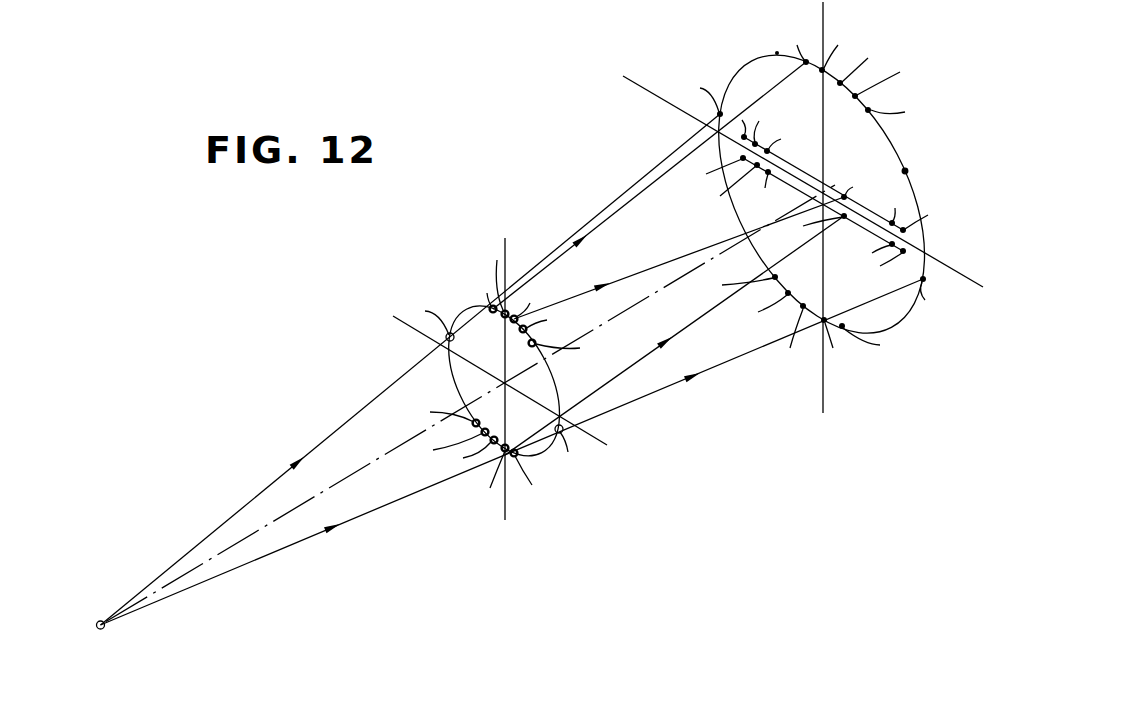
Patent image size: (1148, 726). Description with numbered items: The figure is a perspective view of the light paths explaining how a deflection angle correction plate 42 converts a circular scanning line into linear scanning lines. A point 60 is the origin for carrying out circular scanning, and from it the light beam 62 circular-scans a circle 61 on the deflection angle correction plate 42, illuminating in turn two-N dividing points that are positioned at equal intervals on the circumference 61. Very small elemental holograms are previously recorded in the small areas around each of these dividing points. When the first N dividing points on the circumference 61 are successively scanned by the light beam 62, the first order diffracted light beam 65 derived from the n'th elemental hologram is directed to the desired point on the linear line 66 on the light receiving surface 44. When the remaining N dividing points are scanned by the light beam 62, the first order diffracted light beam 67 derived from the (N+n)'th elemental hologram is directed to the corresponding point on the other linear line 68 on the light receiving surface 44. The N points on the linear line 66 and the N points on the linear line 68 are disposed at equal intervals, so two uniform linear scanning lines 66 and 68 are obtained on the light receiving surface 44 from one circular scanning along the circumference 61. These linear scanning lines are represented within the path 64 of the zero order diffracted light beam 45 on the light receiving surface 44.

The deflection angle correction plate 42 is at (506, 379).
The light receiving surface 44 is at (803, 207).
The zero order diffracted light beam 45 is at (608, 214).
The point 60 is at (102, 620).
The circle 61 is at (553, 367).
The light beam 62 is at (237, 512).
The path of the zero order diffracted light beam 64 is at (908, 170).
The first order diffracted light beam 65 is at (652, 266).
The linear line 66 is at (822, 180).
The first order diffracted light beam 67 is at (688, 338).
The linear line 68 is at (793, 186).